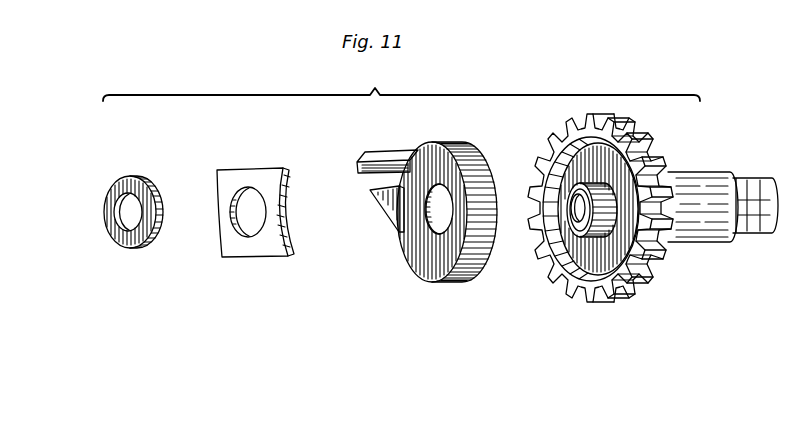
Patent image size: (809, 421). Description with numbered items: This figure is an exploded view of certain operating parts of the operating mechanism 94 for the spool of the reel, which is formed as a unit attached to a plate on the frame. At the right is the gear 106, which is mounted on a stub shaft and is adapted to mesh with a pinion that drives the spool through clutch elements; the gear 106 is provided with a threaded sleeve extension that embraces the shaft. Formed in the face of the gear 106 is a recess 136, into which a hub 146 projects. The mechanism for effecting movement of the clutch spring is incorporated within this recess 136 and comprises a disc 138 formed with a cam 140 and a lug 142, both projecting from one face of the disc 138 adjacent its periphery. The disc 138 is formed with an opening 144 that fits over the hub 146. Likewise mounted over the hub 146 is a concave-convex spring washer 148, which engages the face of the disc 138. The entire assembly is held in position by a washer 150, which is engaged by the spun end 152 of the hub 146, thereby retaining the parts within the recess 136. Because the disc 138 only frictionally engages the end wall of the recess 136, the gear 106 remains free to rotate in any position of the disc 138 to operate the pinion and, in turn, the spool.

The washer 150 is at (140, 250).
The concave-convex spring washer 148 is at (259, 258).
The disc 138 is at (429, 216).
The lug 142 is at (393, 157).
The cam 140 is at (391, 200).
The opening 144 is at (439, 235).
The recess 136 is at (648, 142).
The spun end 152 is at (577, 222).
The hub 146 is at (557, 258).
The gear 106 is at (609, 230).
The operating mechanism 94 is at (712, 183).